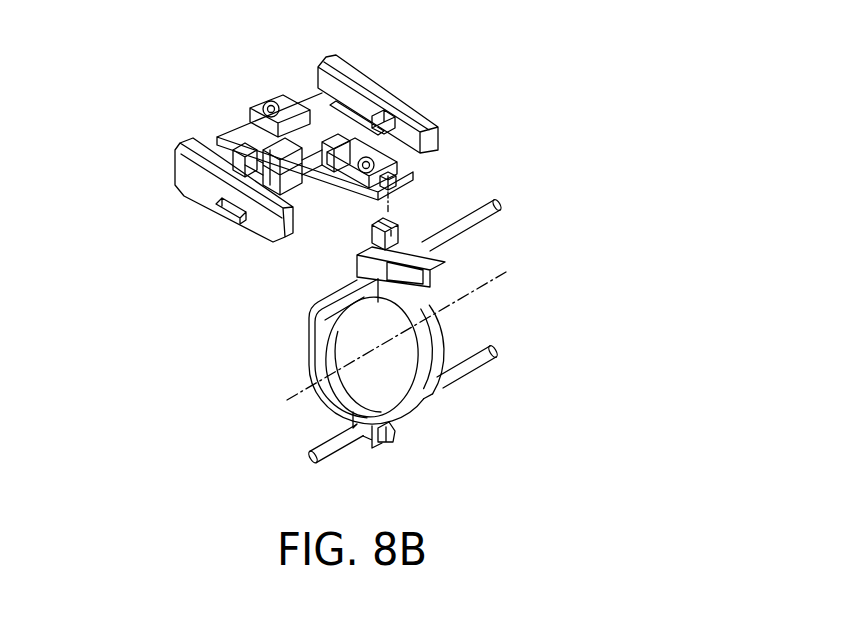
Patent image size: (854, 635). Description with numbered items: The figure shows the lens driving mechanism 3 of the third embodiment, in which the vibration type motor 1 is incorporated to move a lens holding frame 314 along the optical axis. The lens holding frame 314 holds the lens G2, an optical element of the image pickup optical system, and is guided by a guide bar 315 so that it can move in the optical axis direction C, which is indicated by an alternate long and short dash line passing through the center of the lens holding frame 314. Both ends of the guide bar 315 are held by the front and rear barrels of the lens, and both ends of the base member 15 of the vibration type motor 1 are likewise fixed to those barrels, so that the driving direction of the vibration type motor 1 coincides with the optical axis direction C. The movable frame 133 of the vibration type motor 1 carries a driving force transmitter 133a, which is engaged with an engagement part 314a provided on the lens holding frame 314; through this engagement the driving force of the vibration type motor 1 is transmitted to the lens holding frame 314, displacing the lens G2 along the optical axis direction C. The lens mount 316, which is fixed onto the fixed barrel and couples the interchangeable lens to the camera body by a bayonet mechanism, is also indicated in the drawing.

The vibration type motor 1 is at (230, 107).
The lens driving mechanism 3 is at (422, 92).
The base member 15 is at (188, 177).
The movable frame 133 is at (350, 152).
The driving force transmitter 133a is at (388, 180).
The lens holding frame 314 is at (343, 400).
The engagement part 314a is at (388, 225).
The guide bar 315 is at (497, 205).
The lens mount 316 is at (420, 232).
The lens G2 is at (347, 338).
The optical axis direction C is at (382, 350).